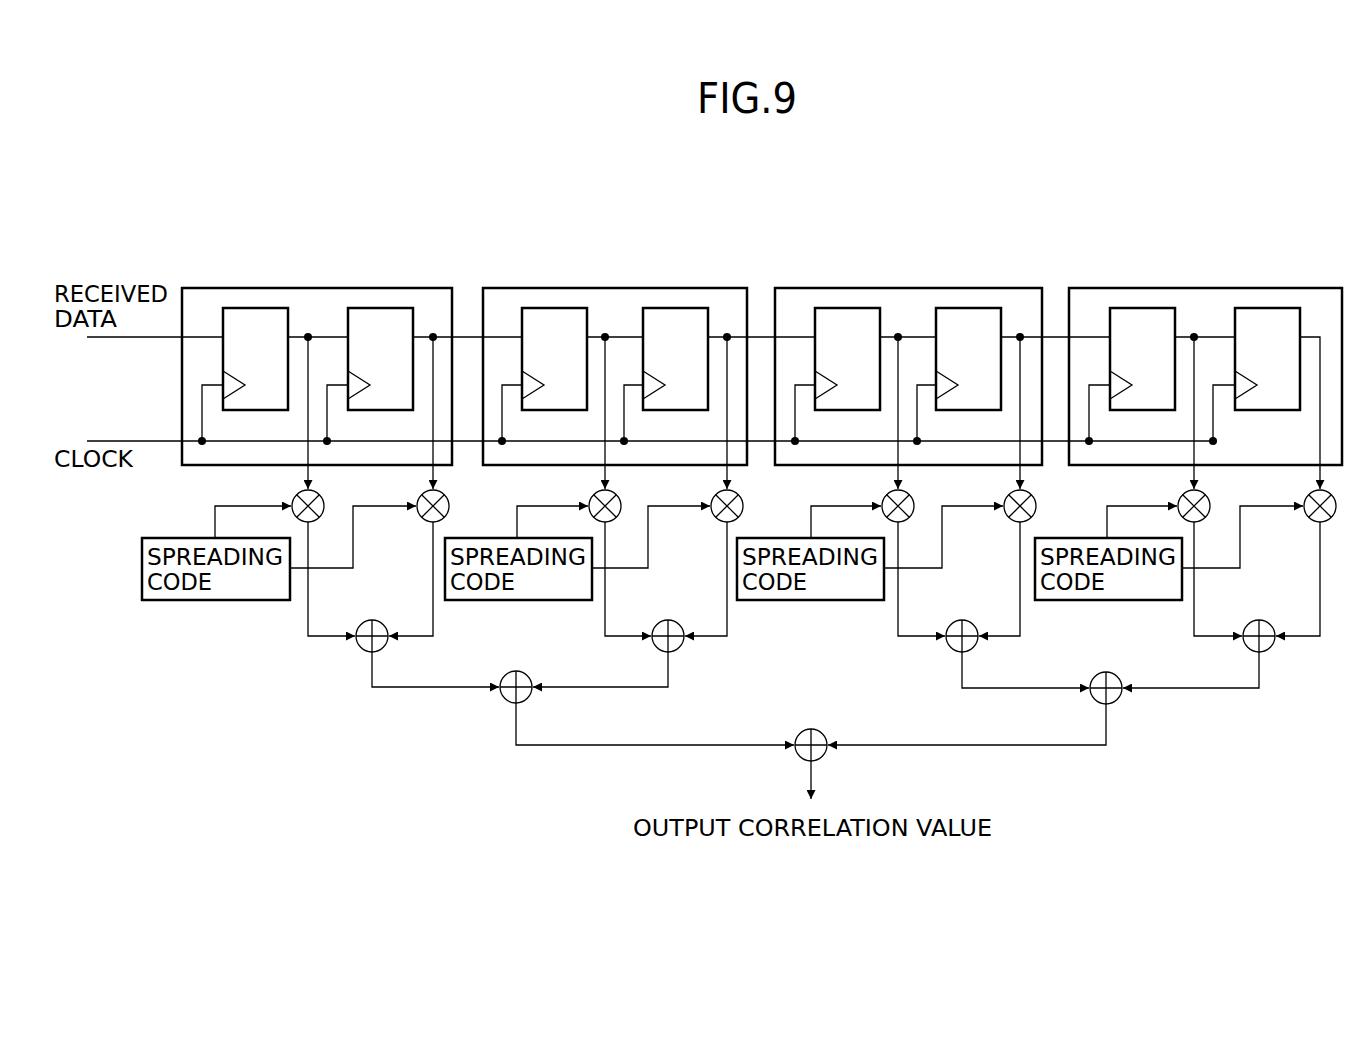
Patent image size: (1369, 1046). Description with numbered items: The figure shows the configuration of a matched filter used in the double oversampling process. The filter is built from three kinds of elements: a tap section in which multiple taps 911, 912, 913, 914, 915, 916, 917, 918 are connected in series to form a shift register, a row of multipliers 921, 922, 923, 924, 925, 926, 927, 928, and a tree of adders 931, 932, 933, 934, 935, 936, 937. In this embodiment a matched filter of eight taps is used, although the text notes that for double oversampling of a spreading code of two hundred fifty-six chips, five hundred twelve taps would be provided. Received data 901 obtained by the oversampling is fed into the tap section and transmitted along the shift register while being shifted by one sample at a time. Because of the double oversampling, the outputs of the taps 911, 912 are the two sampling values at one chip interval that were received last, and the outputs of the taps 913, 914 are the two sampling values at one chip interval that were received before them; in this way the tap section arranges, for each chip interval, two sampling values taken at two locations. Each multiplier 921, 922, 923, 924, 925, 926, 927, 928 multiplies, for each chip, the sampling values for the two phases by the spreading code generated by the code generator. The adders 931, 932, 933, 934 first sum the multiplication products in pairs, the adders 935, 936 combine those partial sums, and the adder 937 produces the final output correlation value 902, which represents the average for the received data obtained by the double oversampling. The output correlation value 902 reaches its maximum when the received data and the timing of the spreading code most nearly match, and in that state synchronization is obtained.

The data 901 is at (105, 338).
The output correlation value 902 is at (813, 772).
The tap 911 is at (258, 308).
The tap 912 is at (383, 308).
The tap 913 is at (557, 308).
The tap 914 is at (678, 308).
The tap 915 is at (850, 308).
The tap 916 is at (971, 308).
The tap 917 is at (1143, 308).
The tap 918 is at (1269, 308).
The multiplier 921 is at (295, 495).
The multiplier 922 is at (420, 495).
The multiplier 923 is at (592, 495).
The multiplier 924 is at (714, 495).
The multiplier 925 is at (885, 495).
The multiplier 926 is at (1007, 495).
The multiplier 927 is at (1181, 495).
The multiplier 928 is at (1307, 495).
The adder 931 is at (377, 622).
The adder 932 is at (673, 622).
The adder 933 is at (967, 622).
The adder 934 is at (1264, 622).
The adder 935 is at (520, 671).
The adder 936 is at (1110, 672).
The adder 937 is at (815, 729).